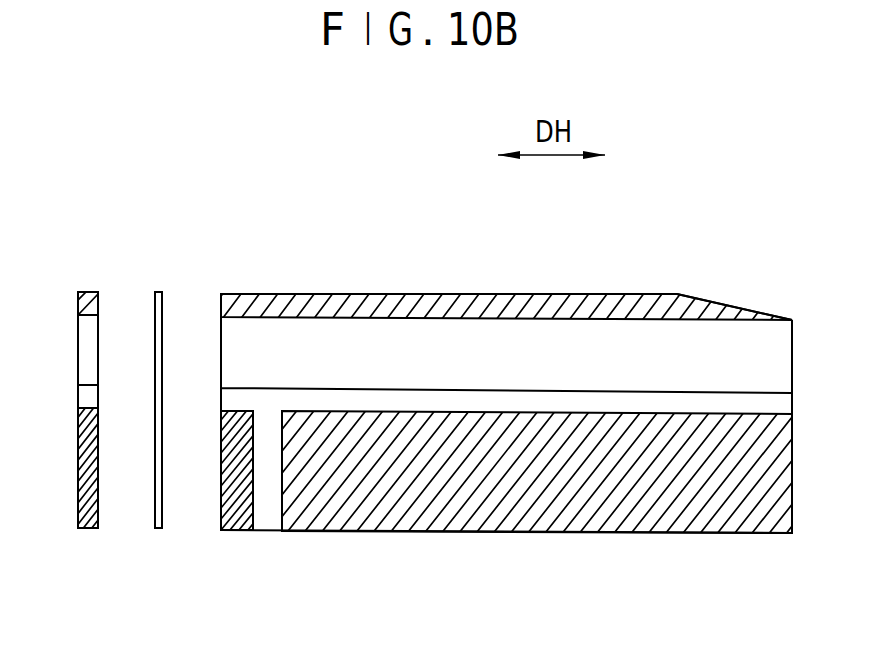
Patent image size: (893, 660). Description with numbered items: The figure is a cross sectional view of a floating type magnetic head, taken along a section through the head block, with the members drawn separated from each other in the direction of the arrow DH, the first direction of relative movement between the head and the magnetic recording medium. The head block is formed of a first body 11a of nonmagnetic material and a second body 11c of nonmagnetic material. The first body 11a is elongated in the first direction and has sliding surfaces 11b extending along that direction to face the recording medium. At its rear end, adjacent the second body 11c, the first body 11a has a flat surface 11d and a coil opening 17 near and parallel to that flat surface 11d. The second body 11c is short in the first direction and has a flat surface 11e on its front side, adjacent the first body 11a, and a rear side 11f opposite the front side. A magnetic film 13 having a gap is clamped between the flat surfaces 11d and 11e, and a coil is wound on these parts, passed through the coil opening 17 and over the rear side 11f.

The first body 11a is at (500, 290).
The sliding surfaces 11b is at (587, 294).
The second body 11c is at (86, 285).
The flat surface 11d is at (218, 507).
The flat surface 11e is at (98, 507).
The rear side 11f is at (77, 507).
The magnetic film 13 is at (162, 310).
The coil opening 17 is at (272, 512).